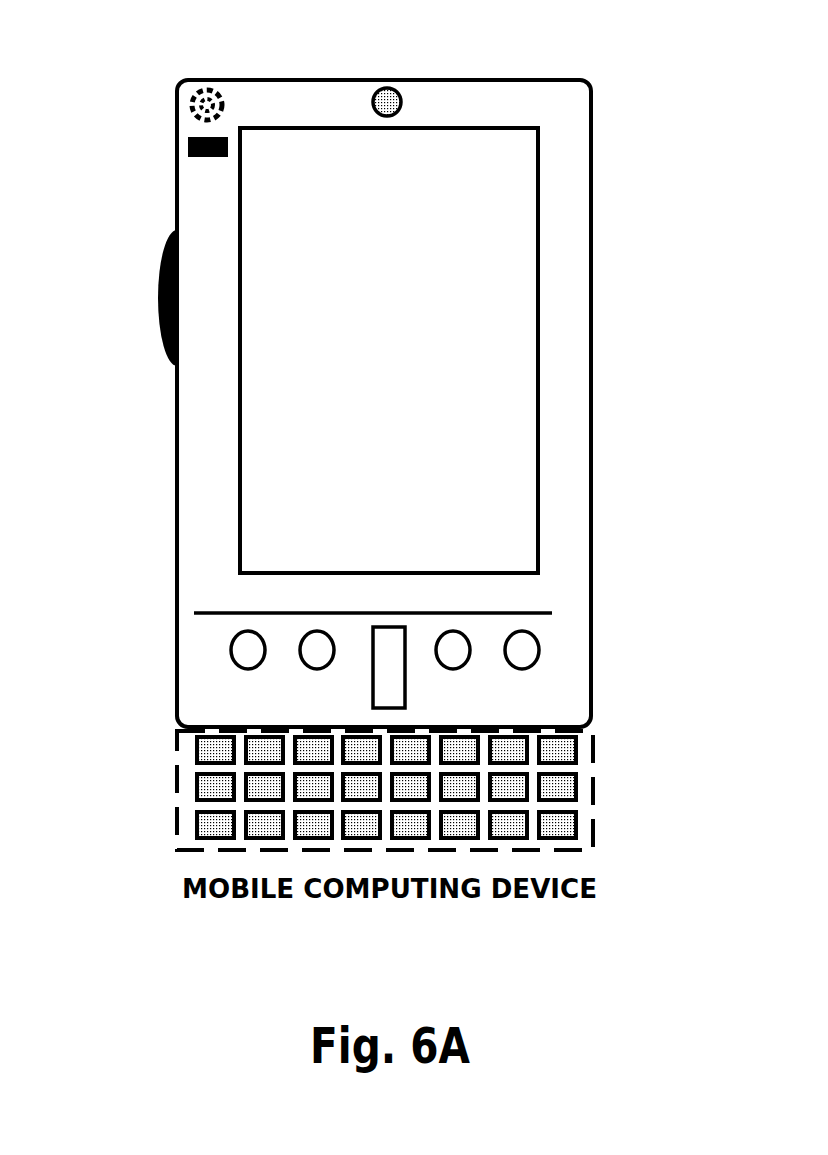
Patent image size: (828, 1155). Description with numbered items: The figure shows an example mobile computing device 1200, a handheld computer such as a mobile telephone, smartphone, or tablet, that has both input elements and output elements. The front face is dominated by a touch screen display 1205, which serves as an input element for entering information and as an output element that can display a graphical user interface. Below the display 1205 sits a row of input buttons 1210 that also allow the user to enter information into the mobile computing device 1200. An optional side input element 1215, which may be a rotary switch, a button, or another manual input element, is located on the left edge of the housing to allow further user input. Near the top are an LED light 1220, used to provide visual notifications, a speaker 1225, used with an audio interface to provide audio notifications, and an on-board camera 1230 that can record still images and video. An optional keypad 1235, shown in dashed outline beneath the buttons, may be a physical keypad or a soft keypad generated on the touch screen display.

The mobile computing device 1200 is at (592, 95).
The touch screen display 1205 is at (263, 511).
The input buttons 1210 is at (527, 662).
The side input element 1215 is at (155, 307).
The LED light 1220 is at (190, 137).
The speaker 1225 is at (192, 98).
The on-board camera 1230 is at (400, 98).
The keypad 1235 is at (177, 818).